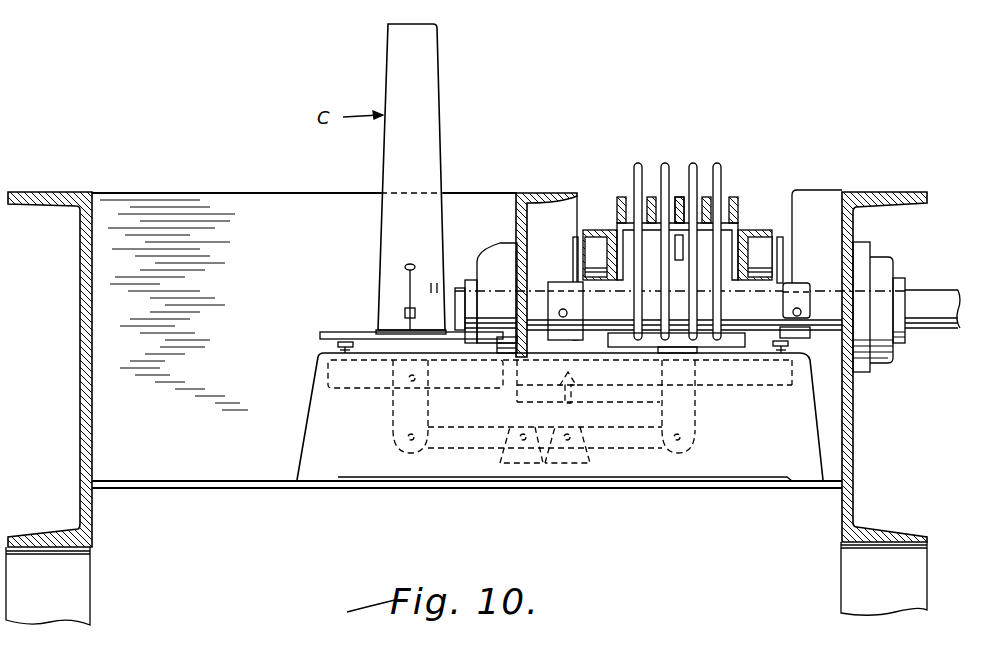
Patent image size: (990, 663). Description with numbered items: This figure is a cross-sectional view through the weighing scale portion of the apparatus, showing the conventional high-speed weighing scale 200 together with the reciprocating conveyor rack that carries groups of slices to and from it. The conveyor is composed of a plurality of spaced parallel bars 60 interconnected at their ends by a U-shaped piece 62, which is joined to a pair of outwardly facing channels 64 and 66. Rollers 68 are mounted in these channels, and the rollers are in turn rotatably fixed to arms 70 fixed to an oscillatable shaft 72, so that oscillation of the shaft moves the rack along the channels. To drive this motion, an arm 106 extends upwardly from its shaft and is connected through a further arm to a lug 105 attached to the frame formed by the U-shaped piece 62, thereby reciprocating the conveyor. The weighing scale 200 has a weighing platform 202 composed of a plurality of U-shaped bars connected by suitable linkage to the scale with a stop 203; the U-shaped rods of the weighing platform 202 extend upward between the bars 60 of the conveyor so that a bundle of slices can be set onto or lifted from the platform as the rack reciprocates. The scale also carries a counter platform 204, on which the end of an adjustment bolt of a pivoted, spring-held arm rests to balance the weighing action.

The weighing scale 200 is at (422, 132).
The weighing platform 202 is at (665, 165).
The arm 106 is at (680, 198).
The channel 64 is at (597, 230).
The bars 60 is at (737, 197).
The U-shaped piece 62 is at (737, 228).
The channel 66 is at (753, 231).
The rollers 68 is at (762, 252).
The arms 70 is at (780, 263).
The oscillatable shaft 72 is at (928, 292).
The lug 105 is at (679, 250).
The counter platform 204 is at (343, 332).
The stop 203 is at (777, 352).